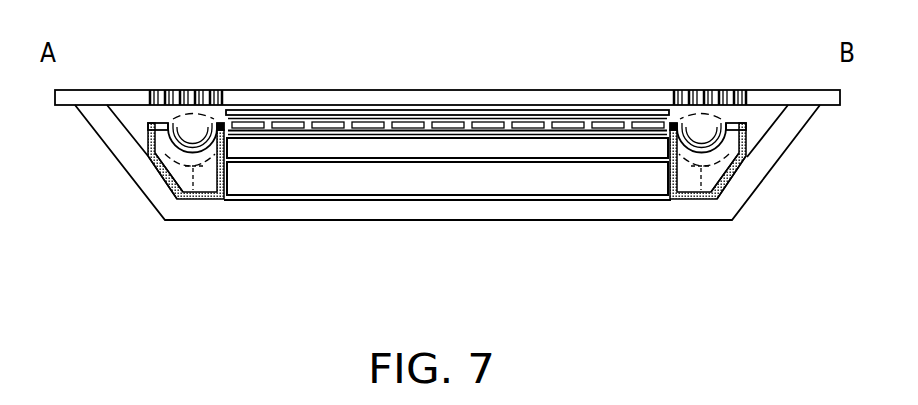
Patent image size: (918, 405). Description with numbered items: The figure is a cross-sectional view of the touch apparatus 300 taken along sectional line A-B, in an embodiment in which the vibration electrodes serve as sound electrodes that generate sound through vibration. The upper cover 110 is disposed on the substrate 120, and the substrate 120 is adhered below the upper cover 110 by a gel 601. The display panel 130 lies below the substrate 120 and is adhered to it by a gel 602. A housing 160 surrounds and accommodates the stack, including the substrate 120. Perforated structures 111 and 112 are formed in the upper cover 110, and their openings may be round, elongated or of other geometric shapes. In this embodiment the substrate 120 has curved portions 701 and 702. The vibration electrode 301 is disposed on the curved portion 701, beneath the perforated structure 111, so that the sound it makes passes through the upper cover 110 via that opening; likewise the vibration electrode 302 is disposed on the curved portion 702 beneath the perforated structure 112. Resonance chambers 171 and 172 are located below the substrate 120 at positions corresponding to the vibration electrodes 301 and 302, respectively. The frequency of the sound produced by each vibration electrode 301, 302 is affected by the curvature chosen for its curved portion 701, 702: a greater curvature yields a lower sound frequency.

The upper cover 110 is at (568, 100).
The perforated structure 111 is at (227, 82).
The perforated structure 112 is at (747, 82).
The substrate 120 is at (148, 124).
The display panel 130 is at (332, 182).
The housing 160 is at (393, 210).
The resonance chamber 171 is at (177, 173).
The resonance chamber 172 is at (717, 175).
The touch apparatus 300 is at (568, 259).
The vibration electrode 301 is at (170, 138).
The vibration electrode 302 is at (724, 138).
The gel 601 is at (516, 112).
The gel 602 is at (276, 150).
The curved portion 701 is at (195, 203).
The curved portion 702 is at (709, 203).